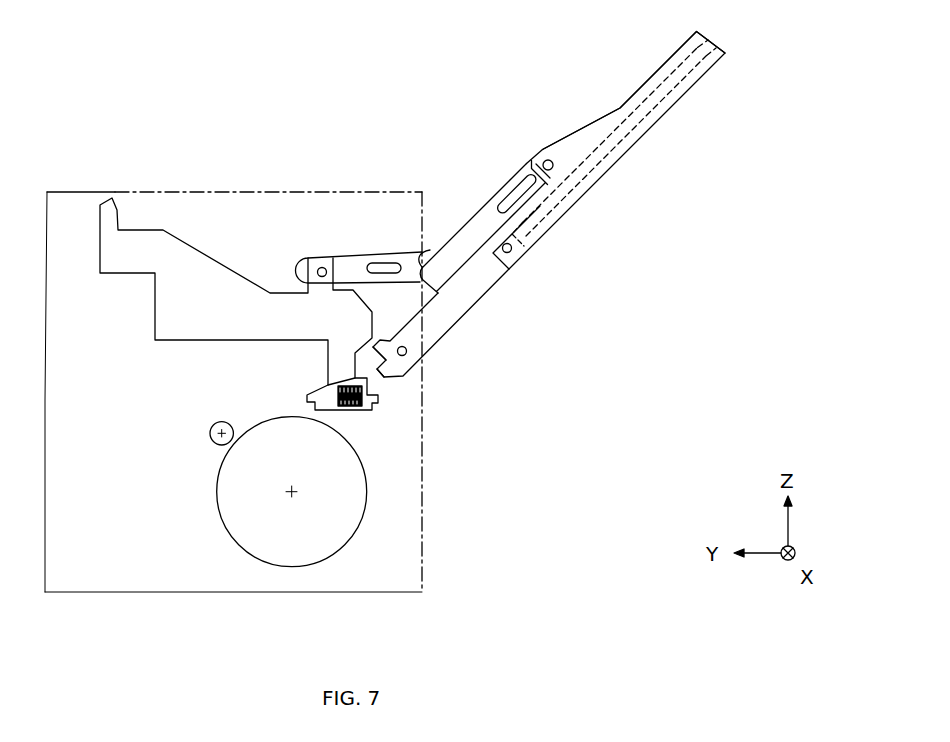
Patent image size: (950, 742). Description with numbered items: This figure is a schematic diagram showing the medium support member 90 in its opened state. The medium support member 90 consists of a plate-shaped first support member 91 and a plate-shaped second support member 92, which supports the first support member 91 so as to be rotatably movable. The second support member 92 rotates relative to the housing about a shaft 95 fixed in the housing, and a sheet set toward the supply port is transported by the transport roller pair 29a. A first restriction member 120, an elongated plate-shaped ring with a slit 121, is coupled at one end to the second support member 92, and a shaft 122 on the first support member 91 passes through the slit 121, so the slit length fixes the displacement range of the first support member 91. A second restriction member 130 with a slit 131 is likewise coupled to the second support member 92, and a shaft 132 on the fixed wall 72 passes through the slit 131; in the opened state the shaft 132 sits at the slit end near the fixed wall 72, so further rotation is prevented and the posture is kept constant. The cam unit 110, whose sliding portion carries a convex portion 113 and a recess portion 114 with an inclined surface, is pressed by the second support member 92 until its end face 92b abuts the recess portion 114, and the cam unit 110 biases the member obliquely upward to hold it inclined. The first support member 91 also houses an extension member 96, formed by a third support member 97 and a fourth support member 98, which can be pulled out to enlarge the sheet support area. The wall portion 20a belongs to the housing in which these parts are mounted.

The housing wall 20a is at (95, 190).
The fixed wall 72 is at (178, 338).
The cam unit 110 is at (397, 431).
The convex portion 113 is at (380, 402).
The transport roller pair 29a is at (224, 507).
The shaft 132 is at (304, 264).
The second restriction member 130 is at (359, 239).
The slit 131 is at (375, 265).
The medium support member 90 is at (577, 237).
The second support member 92 is at (449, 355).
The shaft 95 is at (410, 348).
The recess portion 114 is at (381, 377).
The end face 92b is at (378, 383).
The first support member 91 is at (515, 255).
The first restriction member 120 is at (483, 205).
The slit 121 is at (512, 197).
The shaft 122 is at (543, 155).
The extension member 96 is at (647, 141).
The fourth support member 98 is at (626, 105).
The third support member 97 is at (538, 238).